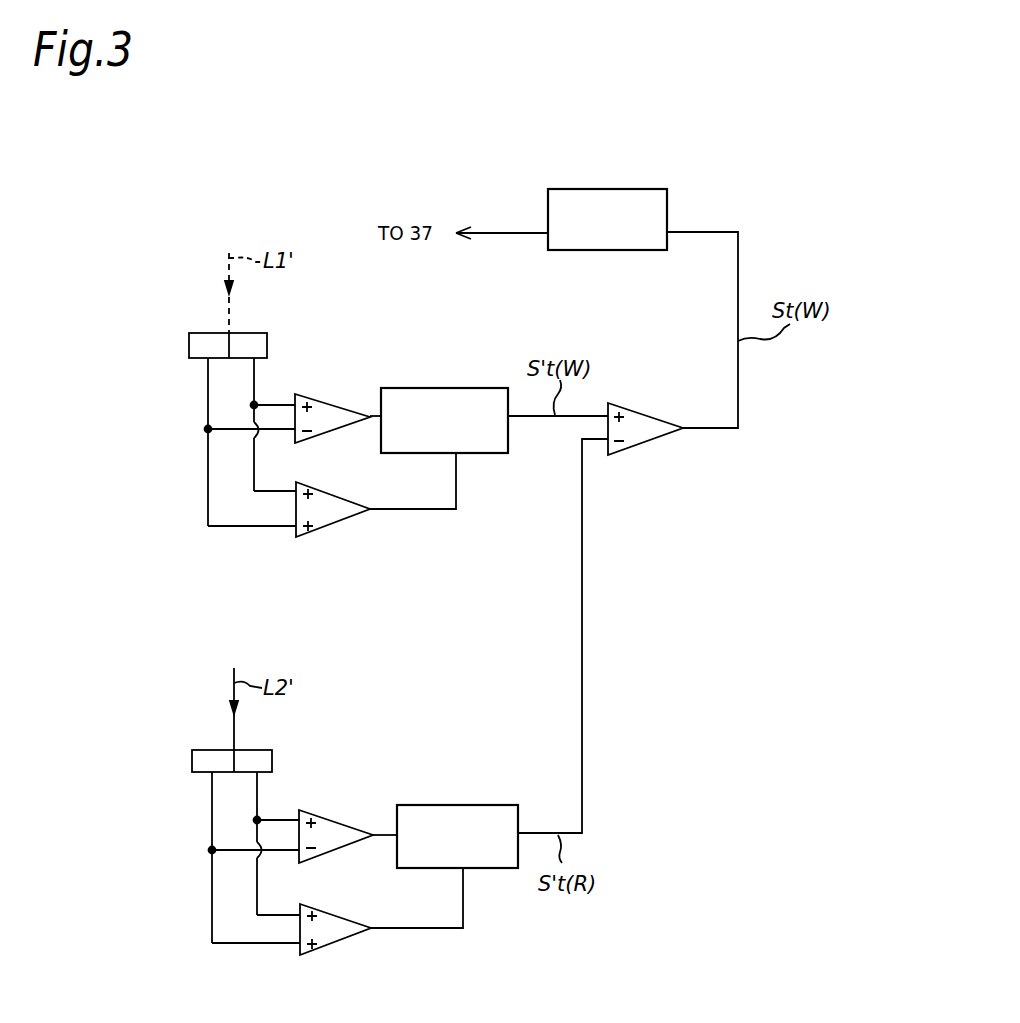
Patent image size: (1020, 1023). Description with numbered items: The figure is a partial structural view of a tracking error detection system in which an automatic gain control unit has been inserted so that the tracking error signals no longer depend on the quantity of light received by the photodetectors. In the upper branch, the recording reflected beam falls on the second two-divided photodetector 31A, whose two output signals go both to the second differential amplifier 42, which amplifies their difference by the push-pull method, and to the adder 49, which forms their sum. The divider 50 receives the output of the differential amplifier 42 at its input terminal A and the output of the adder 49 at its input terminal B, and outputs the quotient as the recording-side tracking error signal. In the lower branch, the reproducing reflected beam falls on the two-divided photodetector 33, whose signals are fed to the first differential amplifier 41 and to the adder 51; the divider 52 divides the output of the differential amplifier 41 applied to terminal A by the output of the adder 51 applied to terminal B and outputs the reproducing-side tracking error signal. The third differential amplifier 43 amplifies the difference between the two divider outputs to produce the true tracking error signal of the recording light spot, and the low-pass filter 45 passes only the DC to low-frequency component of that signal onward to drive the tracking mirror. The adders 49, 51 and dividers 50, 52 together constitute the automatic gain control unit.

The second two-divided photodetector 31A is at (267, 350).
The two-divided photodetector 33 is at (272, 760).
The first differential amplifier 41 is at (334, 824).
The second differential amplifier 42 is at (326, 402).
The third differential amplifier 43 is at (648, 410).
The low-pass filter 45 is at (590, 250).
The adder 49 is at (353, 517).
The divider 50 is at (438, 388).
The adder 51 is at (353, 933).
The divider 52 is at (447, 805).